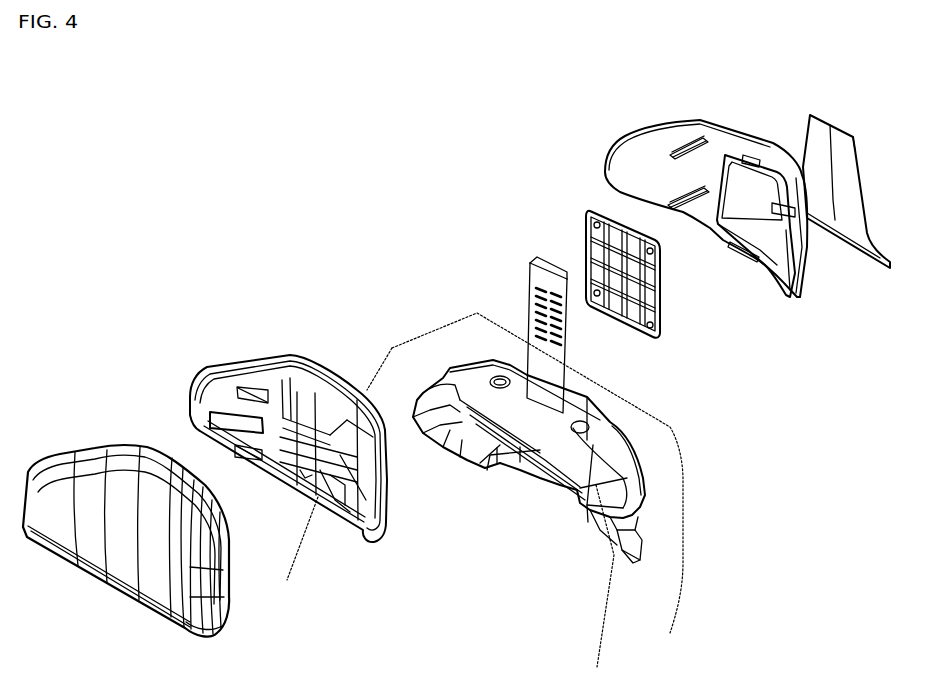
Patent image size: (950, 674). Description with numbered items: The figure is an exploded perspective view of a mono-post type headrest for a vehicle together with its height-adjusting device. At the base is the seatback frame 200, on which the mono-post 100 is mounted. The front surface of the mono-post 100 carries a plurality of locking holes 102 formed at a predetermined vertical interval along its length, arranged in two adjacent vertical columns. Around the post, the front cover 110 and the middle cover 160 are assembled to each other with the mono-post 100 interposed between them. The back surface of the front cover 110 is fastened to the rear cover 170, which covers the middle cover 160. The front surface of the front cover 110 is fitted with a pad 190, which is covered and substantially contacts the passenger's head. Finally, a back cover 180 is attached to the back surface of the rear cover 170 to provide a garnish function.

The mono-post 100 is at (504, 282).
The locking holes 102 is at (530, 312).
The front cover 110 is at (246, 354).
The middle cover 160 is at (663, 307).
The rear cover 170 is at (772, 254).
The back cover 180 is at (855, 235).
The pad 190 is at (94, 481).
The seatback frame 200 is at (588, 402).